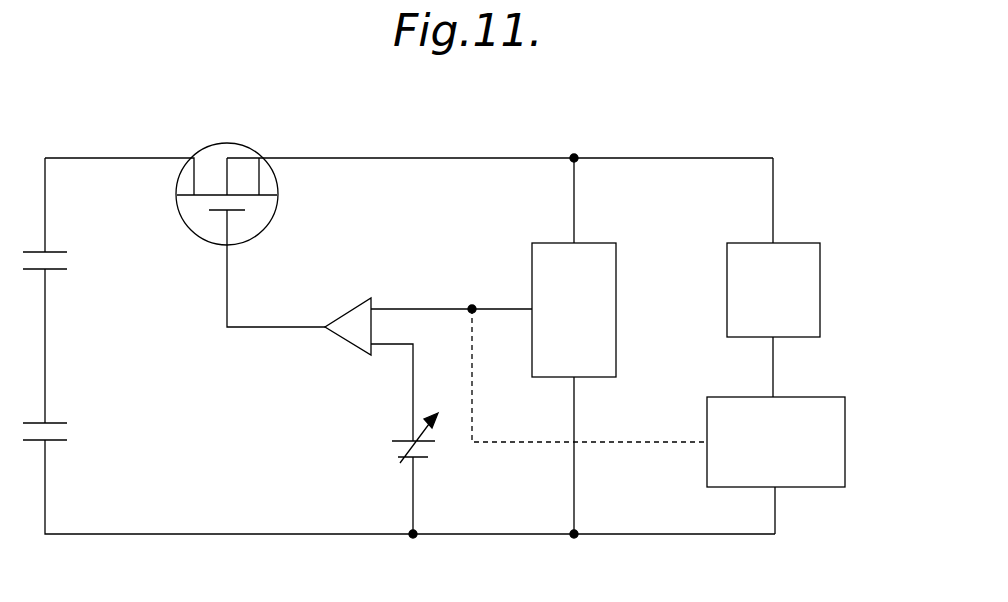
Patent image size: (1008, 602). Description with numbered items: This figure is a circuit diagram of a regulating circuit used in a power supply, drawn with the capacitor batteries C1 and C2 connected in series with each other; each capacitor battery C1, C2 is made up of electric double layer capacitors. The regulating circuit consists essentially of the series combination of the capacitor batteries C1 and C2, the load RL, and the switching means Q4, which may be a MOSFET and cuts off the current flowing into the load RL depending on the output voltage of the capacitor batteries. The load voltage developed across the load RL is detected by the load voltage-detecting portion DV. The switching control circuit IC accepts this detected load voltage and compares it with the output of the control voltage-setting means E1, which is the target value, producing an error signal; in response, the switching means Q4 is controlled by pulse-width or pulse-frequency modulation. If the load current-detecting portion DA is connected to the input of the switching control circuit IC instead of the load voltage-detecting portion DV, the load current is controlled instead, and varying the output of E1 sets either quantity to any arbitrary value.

The switching means Q4 is at (217, 145).
The capacitor battery C2 is at (67, 260).
The capacitor battery C1 is at (68, 430).
The switching control circuit IC is at (340, 312).
The control voltage-setting means E1 is at (392, 438).
The load voltage-detecting portion DV is at (618, 302).
The load RL is at (820, 282).
The load current-detecting portion DA is at (845, 460).